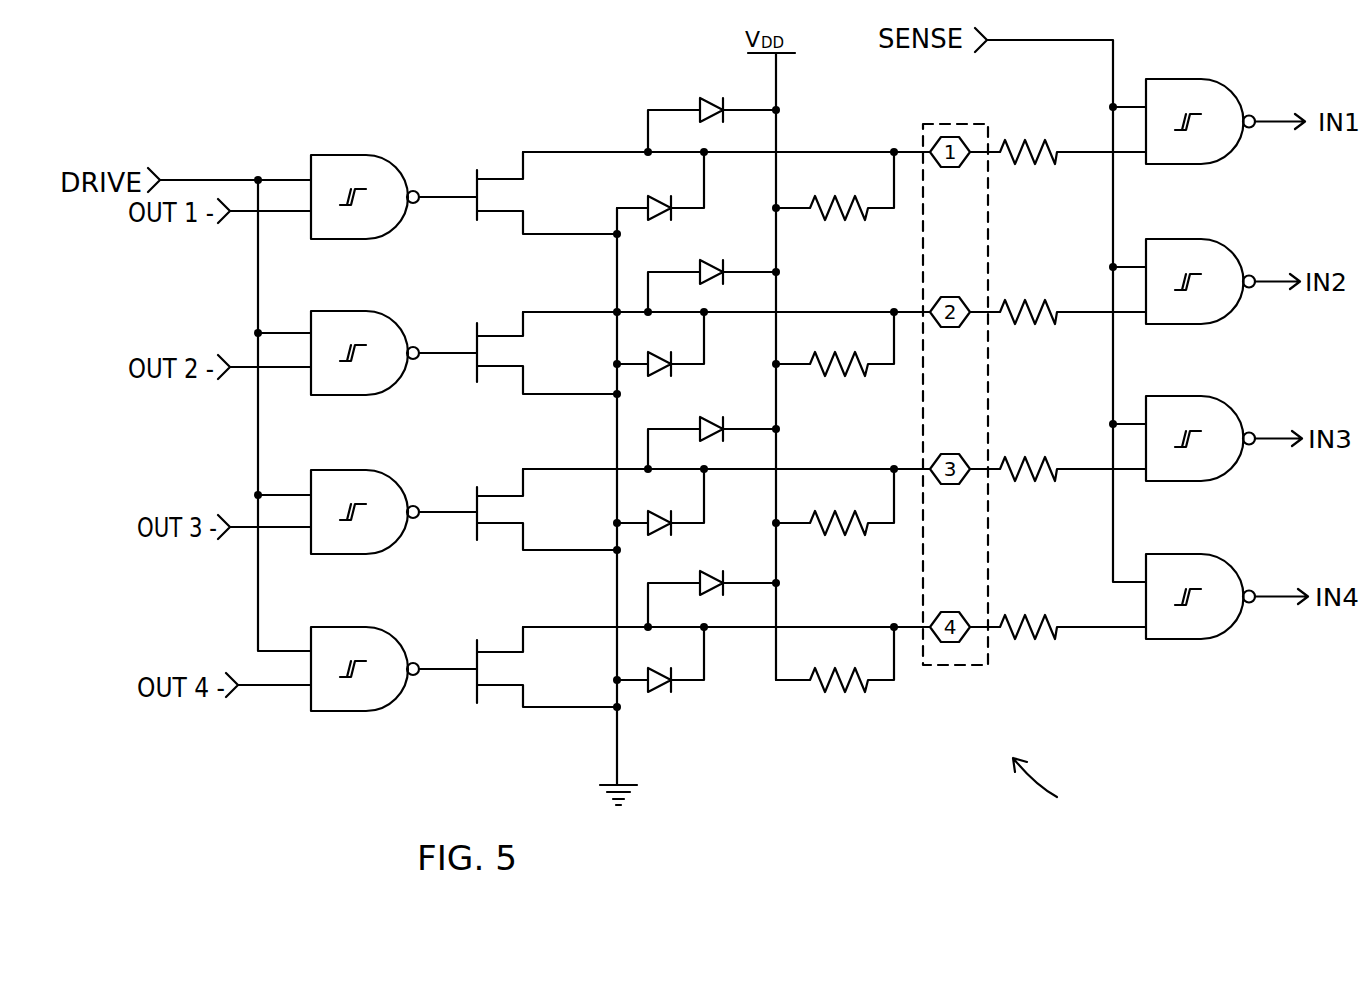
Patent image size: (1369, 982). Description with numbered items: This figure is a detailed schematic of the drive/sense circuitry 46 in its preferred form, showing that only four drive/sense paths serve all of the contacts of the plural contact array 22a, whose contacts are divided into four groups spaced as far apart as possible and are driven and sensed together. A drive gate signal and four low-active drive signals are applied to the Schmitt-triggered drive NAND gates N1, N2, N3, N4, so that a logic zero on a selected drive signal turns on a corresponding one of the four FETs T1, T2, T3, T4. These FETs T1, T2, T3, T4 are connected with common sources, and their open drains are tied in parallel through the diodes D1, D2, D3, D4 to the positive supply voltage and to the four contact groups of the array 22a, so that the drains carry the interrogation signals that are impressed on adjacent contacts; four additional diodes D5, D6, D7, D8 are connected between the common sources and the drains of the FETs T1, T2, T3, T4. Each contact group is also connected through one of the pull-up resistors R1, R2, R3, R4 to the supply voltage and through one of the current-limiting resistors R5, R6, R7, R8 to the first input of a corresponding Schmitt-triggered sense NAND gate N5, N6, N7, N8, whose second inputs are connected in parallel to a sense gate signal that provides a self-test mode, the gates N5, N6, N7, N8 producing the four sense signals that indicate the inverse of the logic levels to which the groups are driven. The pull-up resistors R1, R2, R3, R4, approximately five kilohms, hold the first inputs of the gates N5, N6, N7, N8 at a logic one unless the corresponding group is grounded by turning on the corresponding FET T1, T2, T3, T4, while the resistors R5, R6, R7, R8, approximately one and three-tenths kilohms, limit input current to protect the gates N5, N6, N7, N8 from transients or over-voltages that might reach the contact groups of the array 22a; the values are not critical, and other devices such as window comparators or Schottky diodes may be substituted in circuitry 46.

The Schmitt-triggered drive NAND gate N1 is at (397, 221).
The Schmitt-triggered drive NAND gate N2 is at (397, 377).
The Schmitt-triggered drive NAND gate N3 is at (397, 536).
The Schmitt-triggered drive NAND gate N4 is at (397, 693).
The Schmitt-triggered sense NAND gate N5 is at (1212, 80).
The Schmitt-triggered sense NAND gate N6 is at (1212, 240).
The Schmitt-triggered sense NAND gate N7 is at (1212, 397).
The Schmitt-triggered sense NAND gate N8 is at (1214, 556).
The FET T1 is at (479, 218).
The FET T2 is at (479, 380).
The FET T3 is at (479, 538).
The FET T4 is at (479, 701).
The diode D1 is at (713, 102).
The diode D2 is at (714, 262).
The diode D3 is at (720, 418).
The diode D4 is at (718, 572).
The diode D5 is at (660, 196).
The diode D6 is at (670, 347).
The diode D7 is at (664, 512).
The diode D8 is at (668, 668).
The pull-up resistor R1 is at (855, 196).
The pull-up resistor R2 is at (870, 354).
The pull-up resistor R3 is at (870, 513).
The pull-up resistor R4 is at (870, 670).
The current-limiting resistor R5 is at (1048, 140).
The current-limiting resistor R6 is at (1048, 300).
The current-limiting resistor R7 is at (1048, 458).
The current-limiting resistor R8 is at (1055, 616).
The plural contact array 22a is at (950, 122).
The drive/sense circuitry 46 is at (1056, 790).